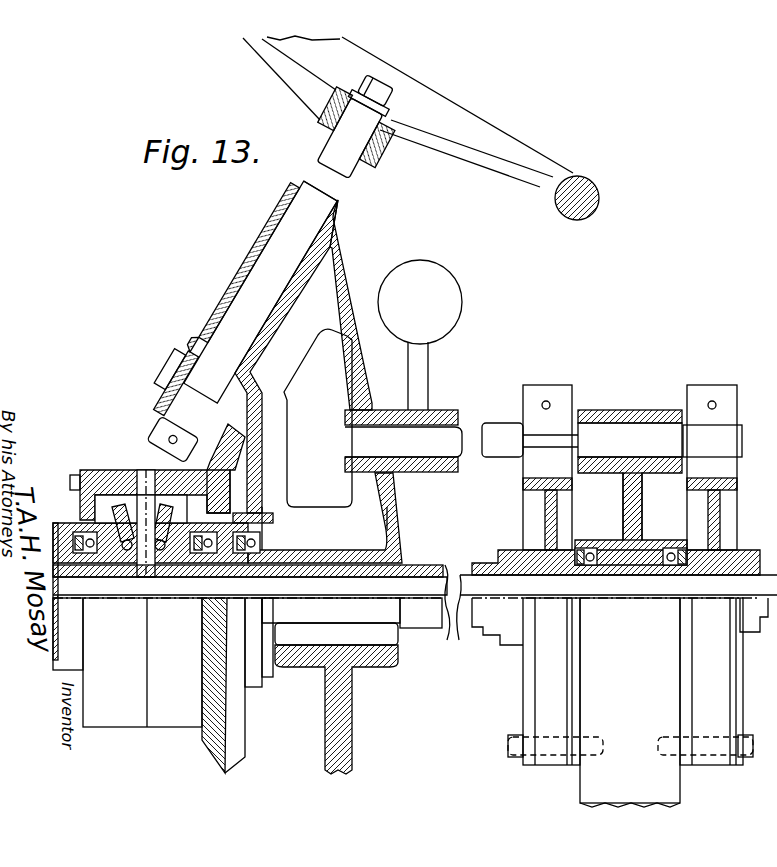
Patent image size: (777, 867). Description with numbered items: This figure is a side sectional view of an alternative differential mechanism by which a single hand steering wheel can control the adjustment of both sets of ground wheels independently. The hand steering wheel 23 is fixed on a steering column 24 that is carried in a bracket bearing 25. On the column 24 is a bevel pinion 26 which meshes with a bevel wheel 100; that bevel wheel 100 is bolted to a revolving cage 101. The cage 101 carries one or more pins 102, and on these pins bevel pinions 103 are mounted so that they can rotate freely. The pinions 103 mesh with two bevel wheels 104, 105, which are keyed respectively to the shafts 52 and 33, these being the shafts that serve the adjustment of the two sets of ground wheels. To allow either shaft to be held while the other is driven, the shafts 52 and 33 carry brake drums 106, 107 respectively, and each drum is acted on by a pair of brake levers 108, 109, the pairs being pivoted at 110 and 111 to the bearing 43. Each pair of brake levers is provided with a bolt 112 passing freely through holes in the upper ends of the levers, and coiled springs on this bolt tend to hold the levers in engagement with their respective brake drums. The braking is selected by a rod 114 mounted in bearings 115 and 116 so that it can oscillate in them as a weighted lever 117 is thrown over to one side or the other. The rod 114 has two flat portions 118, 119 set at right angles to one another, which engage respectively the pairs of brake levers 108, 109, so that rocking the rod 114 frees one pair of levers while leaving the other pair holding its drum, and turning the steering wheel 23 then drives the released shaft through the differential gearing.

The hand steering wheel 23 is at (545, 172).
The steering column 24 is at (255, 275).
The bracket bearing 25 is at (210, 323).
The bevel pinion 26 is at (150, 395).
The bevel wheel 100 is at (243, 443).
The revolving cage 101 is at (102, 470).
The pin 102 is at (147, 530).
The bevel pinion 103 is at (117, 510).
The bevel wheel 104 is at (262, 523).
The bevel wheel 105 is at (75, 522).
The brake drum 106 is at (530, 486).
The brake drum 107 is at (737, 483).
The brake levers 108 is at (540, 390).
The brake levers 109 is at (715, 388).
The pivot 110 is at (550, 752).
The pivot 111 is at (717, 752).
The bolt 112 is at (549, 403).
The rod 114 is at (495, 432).
The bearing 115 is at (380, 412).
The bearing 116 is at (637, 412).
The weighted lever 117 is at (422, 364).
The flat portion 118 is at (550, 437).
The flat portion 119 is at (733, 444).
The bearing 43 is at (637, 547).
The shaft 52 is at (440, 568).
The shaft 33 is at (462, 612).